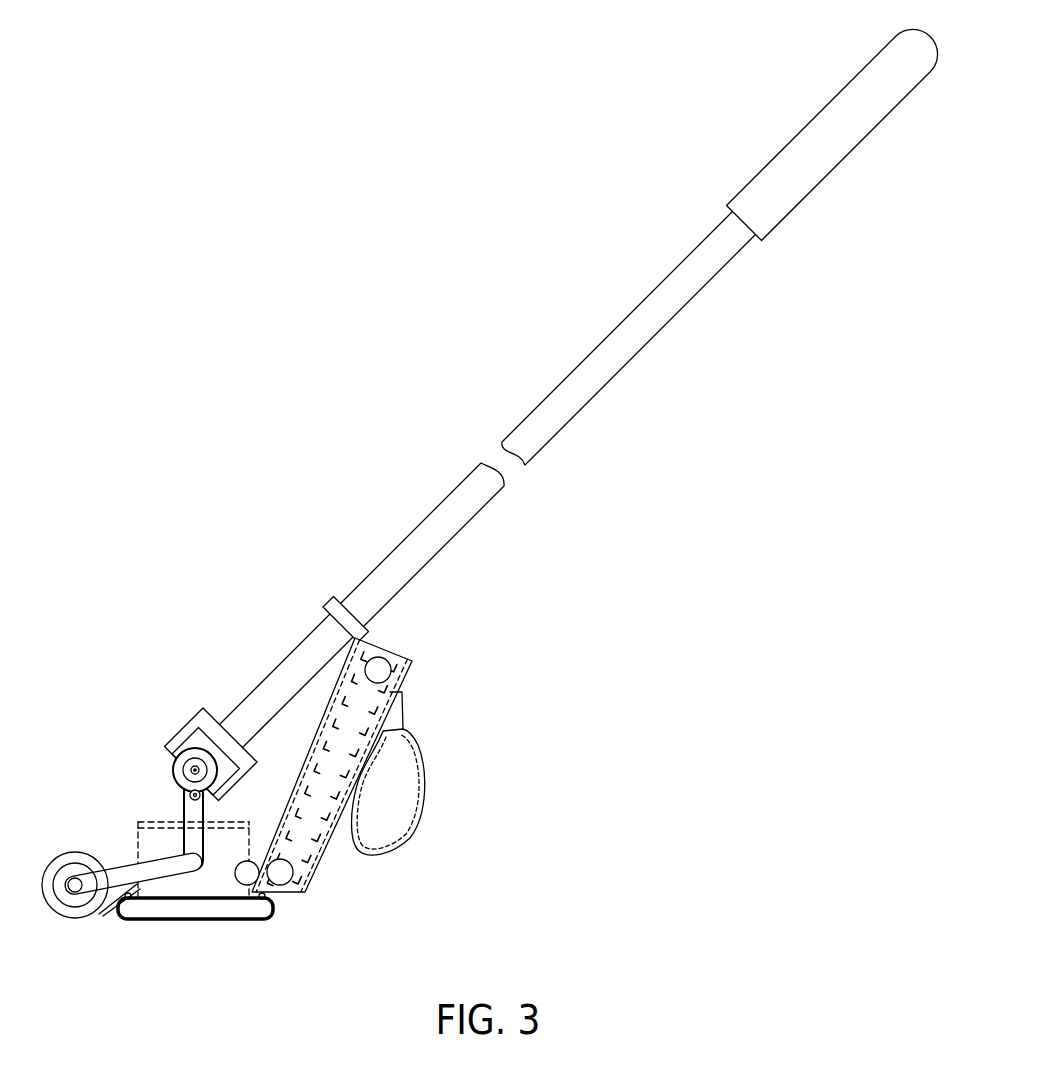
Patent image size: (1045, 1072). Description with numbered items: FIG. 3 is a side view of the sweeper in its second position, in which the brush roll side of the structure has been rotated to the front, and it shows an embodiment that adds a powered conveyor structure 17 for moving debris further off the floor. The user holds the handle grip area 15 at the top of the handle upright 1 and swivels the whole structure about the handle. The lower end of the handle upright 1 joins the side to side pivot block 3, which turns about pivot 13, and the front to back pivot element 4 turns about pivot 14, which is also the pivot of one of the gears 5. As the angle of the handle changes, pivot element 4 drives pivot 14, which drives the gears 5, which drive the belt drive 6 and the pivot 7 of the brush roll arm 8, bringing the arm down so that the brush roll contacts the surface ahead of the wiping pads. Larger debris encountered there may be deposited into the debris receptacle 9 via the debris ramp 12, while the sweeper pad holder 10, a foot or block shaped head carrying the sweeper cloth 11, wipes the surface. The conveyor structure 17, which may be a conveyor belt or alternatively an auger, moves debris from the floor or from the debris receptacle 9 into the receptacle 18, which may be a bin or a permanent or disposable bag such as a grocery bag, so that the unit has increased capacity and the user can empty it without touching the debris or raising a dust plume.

The handle upright 1 is at (400, 568).
The side to side pivot block 3 is at (218, 723).
The front to back pivot element 4 is at (173, 770).
The gears for transmitting motion and/or reversing motion 5 is at (186, 784).
The belt drive for transmitting motion and/or reversing motion 6 is at (182, 813).
The pivot of arm 7 is at (197, 877).
The brush roll arm 8 is at (113, 863).
The debris receptacle 9 is at (163, 883).
The sweeper pad holder 10 is at (145, 907).
The sweeper cloth 11 is at (247, 922).
The debris ramp 12 is at (104, 914).
The pivot of side to side pivot block 13 is at (173, 757).
The pivot of front to back pivot element and of one of the gears 14 is at (183, 748).
The handle grip area 15 is at (820, 163).
The conveyor structure 17 is at (310, 865).
The receptacle 18 is at (400, 763).